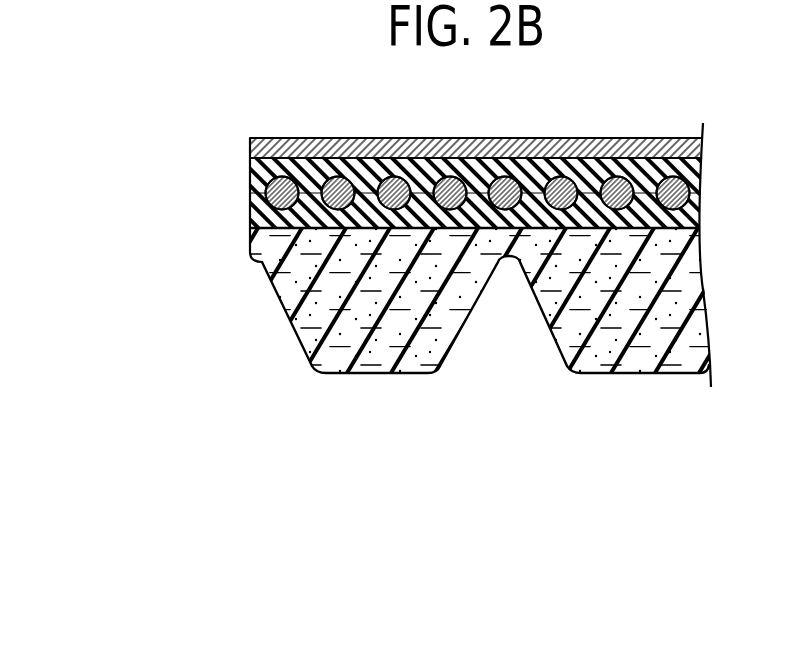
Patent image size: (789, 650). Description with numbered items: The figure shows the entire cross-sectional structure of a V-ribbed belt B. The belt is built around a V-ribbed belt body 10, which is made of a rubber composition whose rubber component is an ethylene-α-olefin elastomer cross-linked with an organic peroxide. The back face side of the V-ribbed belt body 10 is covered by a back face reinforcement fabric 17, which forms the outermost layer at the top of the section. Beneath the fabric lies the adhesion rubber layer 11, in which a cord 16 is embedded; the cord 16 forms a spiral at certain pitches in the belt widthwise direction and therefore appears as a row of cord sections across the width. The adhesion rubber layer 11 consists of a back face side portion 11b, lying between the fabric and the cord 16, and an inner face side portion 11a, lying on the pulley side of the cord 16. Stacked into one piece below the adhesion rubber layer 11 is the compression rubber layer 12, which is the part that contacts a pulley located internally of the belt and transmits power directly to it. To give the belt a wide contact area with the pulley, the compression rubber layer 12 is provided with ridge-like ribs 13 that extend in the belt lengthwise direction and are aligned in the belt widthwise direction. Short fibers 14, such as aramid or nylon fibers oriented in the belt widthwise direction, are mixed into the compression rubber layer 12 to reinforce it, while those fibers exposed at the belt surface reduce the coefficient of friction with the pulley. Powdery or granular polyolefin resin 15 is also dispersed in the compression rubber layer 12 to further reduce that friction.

The V-ribbed belt B is at (603, 111).
The V-ribbed belt body 10 is at (271, 283).
The adhesion rubber layer 11 is at (153, 165).
The inner face side portion of the adhesion rubber layer 11a is at (250, 216).
The back face side portion of the adhesion rubber layer 11b is at (250, 178).
The compression rubber layer 12 is at (302, 342).
The ribs 13 is at (375, 360).
The short fibers 14 is at (567, 293).
The polyolefin resin 15 is at (682, 280).
The cord 16 is at (443, 179).
The back face reinforcement fabric 17 is at (250, 145).